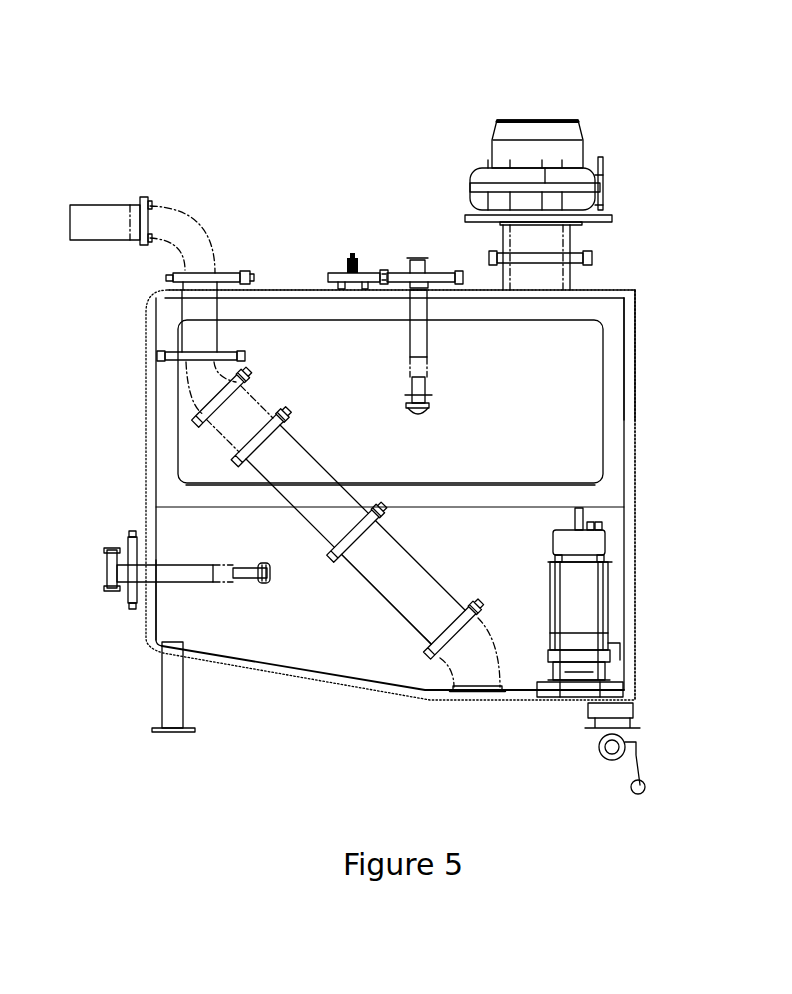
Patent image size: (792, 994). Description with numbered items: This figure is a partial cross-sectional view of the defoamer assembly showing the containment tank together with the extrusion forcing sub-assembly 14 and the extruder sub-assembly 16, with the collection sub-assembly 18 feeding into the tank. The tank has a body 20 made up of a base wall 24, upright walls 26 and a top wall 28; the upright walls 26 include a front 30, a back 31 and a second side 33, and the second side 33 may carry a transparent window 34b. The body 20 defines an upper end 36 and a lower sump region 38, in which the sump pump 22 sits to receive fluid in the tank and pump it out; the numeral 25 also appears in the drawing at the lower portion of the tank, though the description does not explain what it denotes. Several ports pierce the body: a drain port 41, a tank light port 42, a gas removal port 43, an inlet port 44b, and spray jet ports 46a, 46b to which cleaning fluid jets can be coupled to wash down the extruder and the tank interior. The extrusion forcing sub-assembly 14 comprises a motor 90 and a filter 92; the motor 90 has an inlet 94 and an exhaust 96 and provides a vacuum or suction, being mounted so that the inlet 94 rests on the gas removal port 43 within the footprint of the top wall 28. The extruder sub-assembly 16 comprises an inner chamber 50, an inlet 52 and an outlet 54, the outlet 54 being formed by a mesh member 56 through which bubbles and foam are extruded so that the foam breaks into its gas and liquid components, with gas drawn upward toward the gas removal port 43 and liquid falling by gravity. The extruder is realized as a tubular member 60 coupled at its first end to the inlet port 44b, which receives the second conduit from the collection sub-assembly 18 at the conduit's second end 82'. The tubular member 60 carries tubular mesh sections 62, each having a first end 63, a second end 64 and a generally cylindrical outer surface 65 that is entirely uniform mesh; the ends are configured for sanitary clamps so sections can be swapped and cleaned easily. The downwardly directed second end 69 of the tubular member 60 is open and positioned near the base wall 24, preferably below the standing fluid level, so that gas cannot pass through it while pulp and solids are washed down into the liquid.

The extrusion forcing sub-assembly 14 is at (579, 142).
The extruder sub-assembly 16 is at (385, 514).
The collection sub-assembly 18 is at (110, 185).
The body 20 is at (680, 388).
The sump pump 22 is at (350, 248).
The base wall 24 is at (412, 702).
The lower chamber 25 is at (170, 592).
The upright walls 26 is at (640, 432).
The top wall 28 is at (255, 282).
The front 30 is at (640, 485).
The back 31 is at (140, 456).
The second side 33 is at (614, 340).
The window 34b is at (560, 347).
The upper end 36 is at (645, 358).
The sump region 38 is at (530, 660).
The drain port 41 is at (620, 708).
The tank light port 42 is at (320, 287).
The gas removal port 43 is at (575, 280).
The inlet port 44b is at (152, 273).
The spray jet port 46a is at (114, 600).
The spray jet port 46b is at (410, 243).
The inner chamber 50 is at (187, 378).
The inlet 52 is at (159, 348).
The outlet 54 is at (375, 596).
The mesh member 56 is at (398, 582).
The tubular member 60 is at (454, 593).
The tubular mesh section 62 is at (412, 637).
The first end 63 is at (338, 570).
The second end 64 is at (484, 622).
The outer surface 65 is at (432, 572).
The second end 69 is at (470, 703).
The second end 82' is at (213, 227).
The motor 90 is at (560, 114).
The filter 92 is at (493, 250).
The inlet 94 is at (560, 243).
The exhaust 96 is at (609, 178).